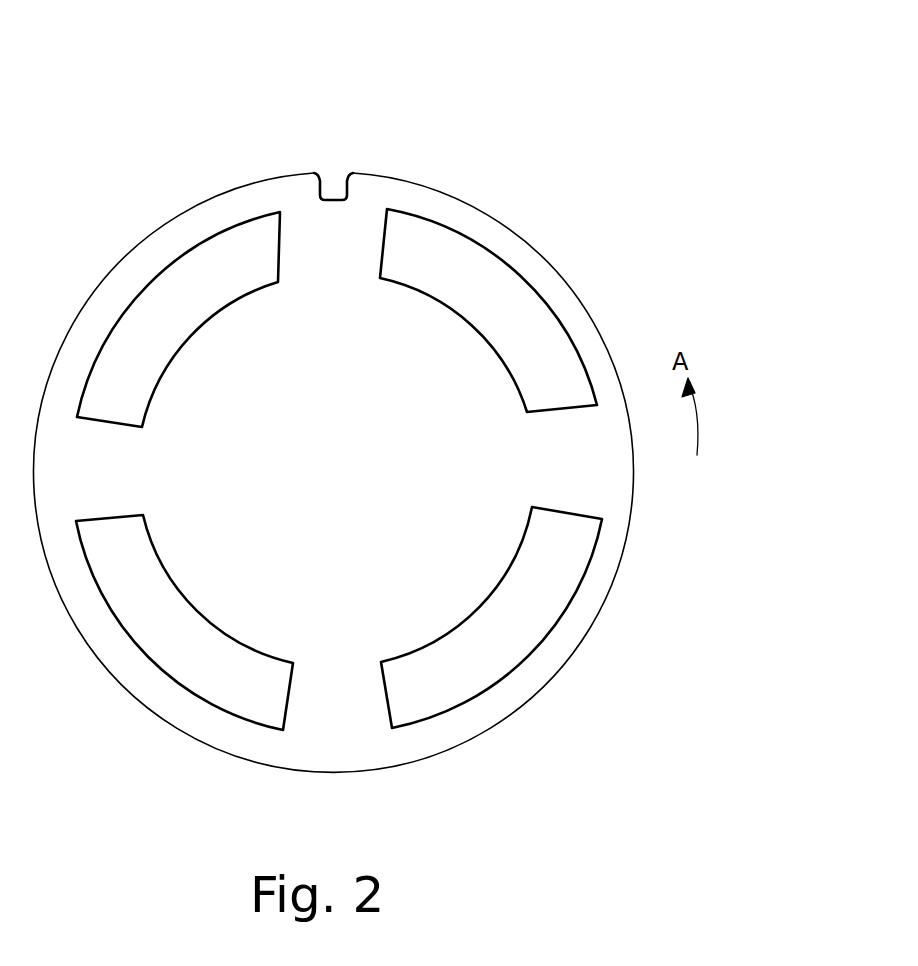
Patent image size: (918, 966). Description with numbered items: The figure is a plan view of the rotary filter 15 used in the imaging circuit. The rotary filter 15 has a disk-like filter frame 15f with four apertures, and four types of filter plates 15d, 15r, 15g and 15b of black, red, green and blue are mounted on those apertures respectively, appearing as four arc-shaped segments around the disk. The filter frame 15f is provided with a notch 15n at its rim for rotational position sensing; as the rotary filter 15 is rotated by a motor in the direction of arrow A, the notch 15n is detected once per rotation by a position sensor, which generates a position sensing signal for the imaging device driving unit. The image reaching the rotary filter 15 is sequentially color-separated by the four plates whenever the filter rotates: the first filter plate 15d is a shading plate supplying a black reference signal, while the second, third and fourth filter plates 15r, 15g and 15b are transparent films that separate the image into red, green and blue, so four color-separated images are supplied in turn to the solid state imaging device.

The rotary filter 15 is at (382, 395).
The notch 15n is at (332, 186).
The fourth filter plate 15b is at (130, 323).
The first filter plate 15d is at (530, 318).
The filter frame 15f is at (636, 502).
The third filter plate 15g is at (177, 663).
The second filter plate 15r is at (515, 653).